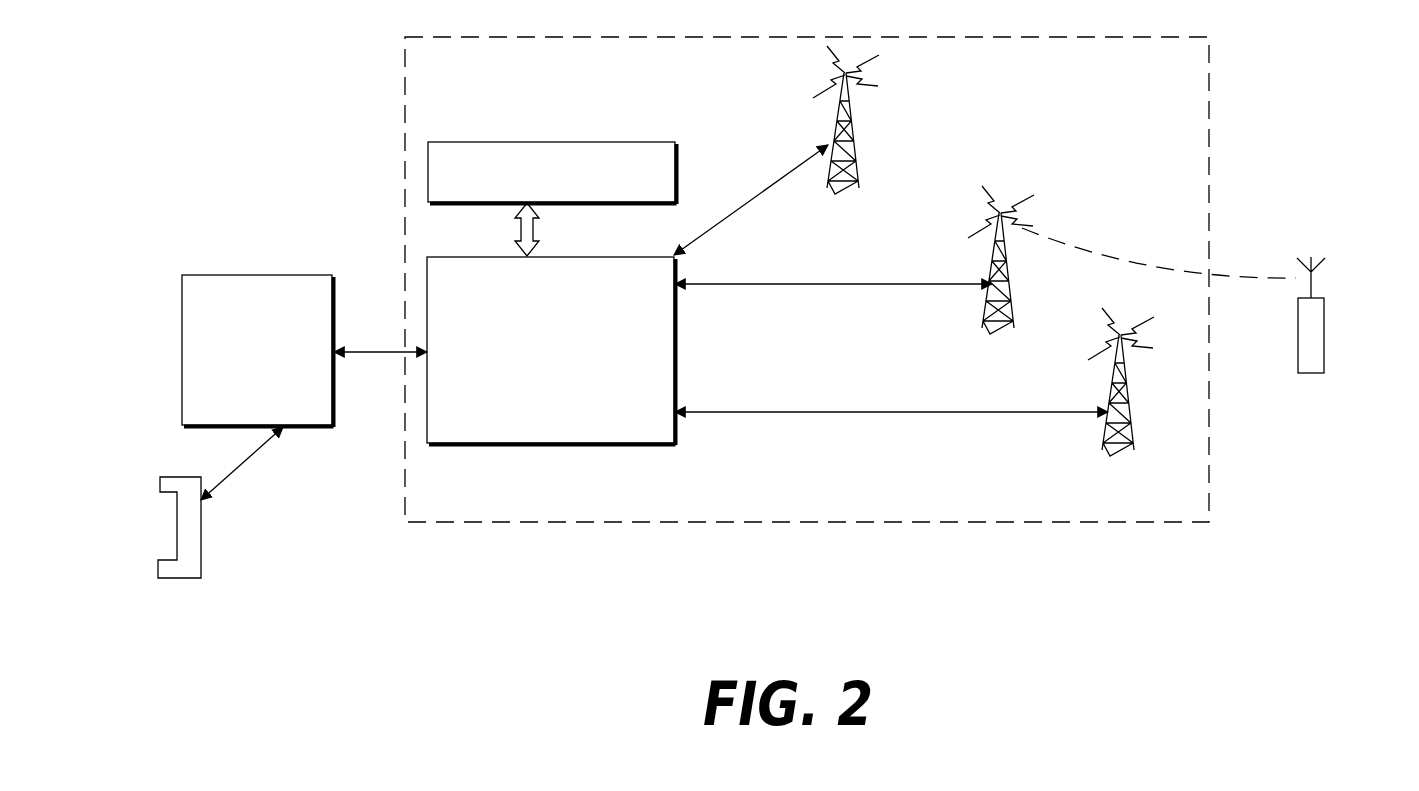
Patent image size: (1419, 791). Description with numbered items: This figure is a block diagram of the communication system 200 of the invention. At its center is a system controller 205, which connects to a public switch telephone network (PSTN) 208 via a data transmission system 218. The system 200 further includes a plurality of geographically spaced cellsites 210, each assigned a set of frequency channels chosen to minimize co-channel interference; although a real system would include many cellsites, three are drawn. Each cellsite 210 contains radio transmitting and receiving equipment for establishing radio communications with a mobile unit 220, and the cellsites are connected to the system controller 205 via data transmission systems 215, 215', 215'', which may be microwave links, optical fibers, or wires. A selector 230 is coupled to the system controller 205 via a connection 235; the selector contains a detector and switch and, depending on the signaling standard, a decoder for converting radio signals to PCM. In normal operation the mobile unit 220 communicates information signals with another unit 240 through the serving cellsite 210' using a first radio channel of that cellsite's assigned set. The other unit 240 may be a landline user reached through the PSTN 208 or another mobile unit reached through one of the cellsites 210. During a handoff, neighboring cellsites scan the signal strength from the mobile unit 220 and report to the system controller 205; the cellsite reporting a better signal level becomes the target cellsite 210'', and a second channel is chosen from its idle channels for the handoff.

The communication system 200 is at (418, 522).
The system controller 205 is at (600, 445).
The public switch telephone network 208 is at (228, 274).
The cellsite 210 is at (887, 120).
The serving cellsite 210' is at (955, 260).
The target cellsite 210'' is at (1194, 395).
The data transmission system 215 is at (751, 196).
The data transmission system 215' is at (833, 326).
The data transmission system 215'' is at (891, 447).
The data transmission system 218 is at (375, 350).
The mobile unit 220 is at (1324, 327).
The selector 230 is at (563, 142).
The connection 235 is at (535, 230).
The other unit 240 is at (162, 580).